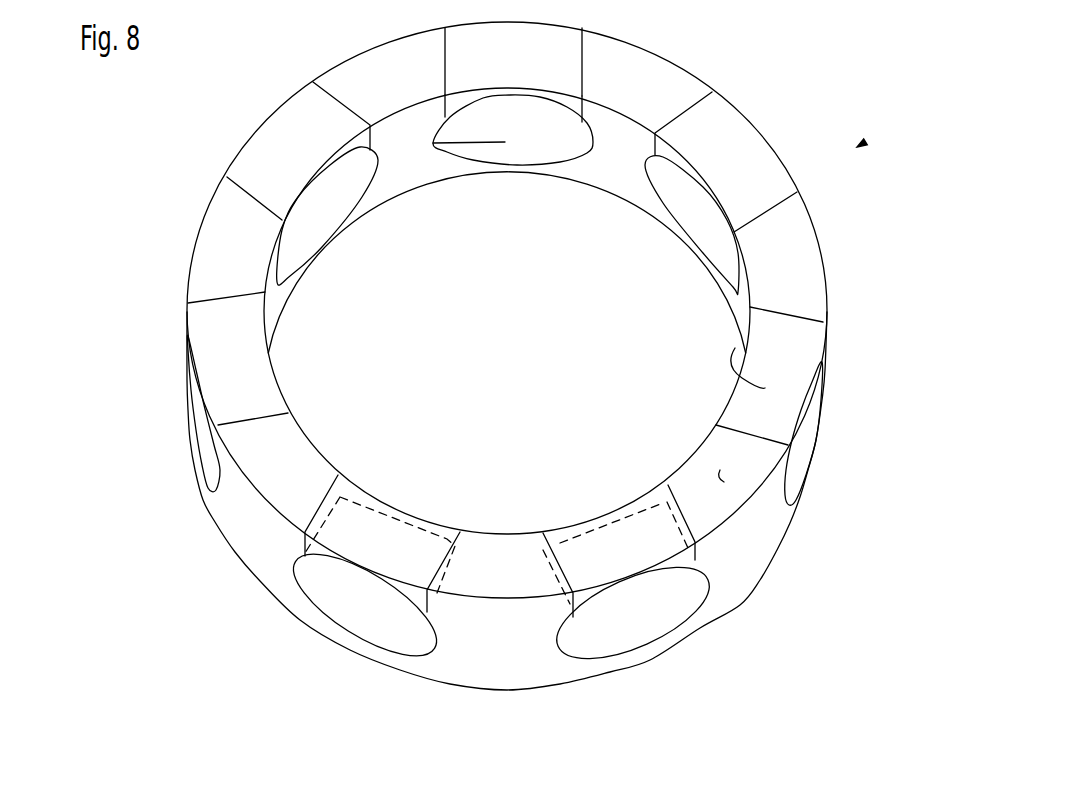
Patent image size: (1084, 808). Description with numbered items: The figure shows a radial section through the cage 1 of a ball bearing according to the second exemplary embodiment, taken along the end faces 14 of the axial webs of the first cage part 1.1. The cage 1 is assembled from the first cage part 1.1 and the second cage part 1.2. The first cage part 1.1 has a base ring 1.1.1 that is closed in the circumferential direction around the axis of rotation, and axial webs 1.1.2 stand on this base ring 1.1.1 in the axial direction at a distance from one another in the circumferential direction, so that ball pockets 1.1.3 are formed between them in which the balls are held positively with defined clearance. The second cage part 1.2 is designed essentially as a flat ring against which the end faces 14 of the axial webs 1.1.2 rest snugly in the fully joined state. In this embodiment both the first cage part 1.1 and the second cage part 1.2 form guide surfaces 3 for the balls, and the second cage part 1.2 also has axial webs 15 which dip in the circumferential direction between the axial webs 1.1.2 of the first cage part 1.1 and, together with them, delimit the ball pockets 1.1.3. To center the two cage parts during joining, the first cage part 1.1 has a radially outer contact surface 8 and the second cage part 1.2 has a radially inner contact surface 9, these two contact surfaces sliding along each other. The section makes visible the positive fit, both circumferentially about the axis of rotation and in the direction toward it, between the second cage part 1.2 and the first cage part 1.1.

The cage 1 is at (857, 147).
The first cage part 1.1 is at (240, 493).
The base ring 1.1.1 is at (293, 592).
The axial webs 1.1.2 is at (750, 552).
The ball pockets 1.1.3 is at (650, 613).
The second cage part 1.2 is at (263, 148).
The guide surfaces 3 is at (305, 221).
The radially outer contact surface 8 is at (778, 447).
The radially inner contact surface 9 is at (792, 452).
The end faces 14 is at (720, 470).
The axial webs 15 is at (633, 542).